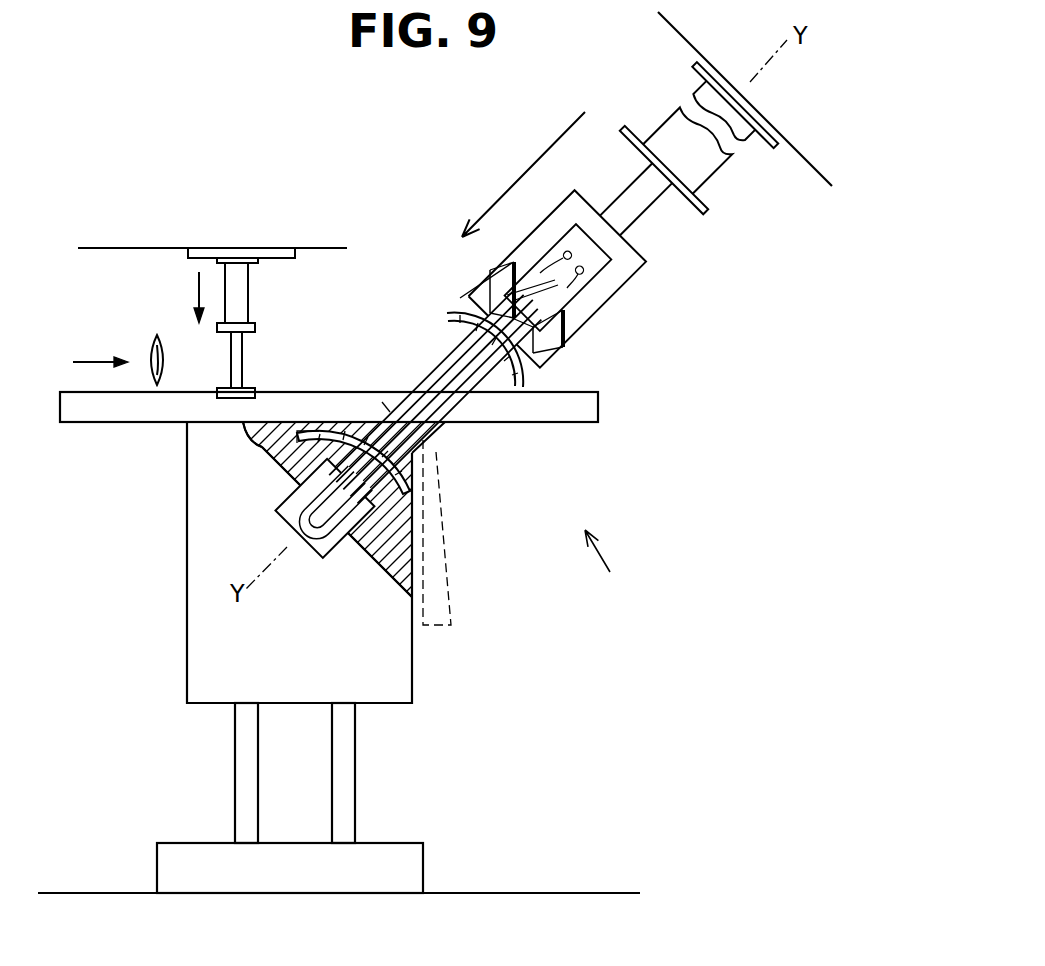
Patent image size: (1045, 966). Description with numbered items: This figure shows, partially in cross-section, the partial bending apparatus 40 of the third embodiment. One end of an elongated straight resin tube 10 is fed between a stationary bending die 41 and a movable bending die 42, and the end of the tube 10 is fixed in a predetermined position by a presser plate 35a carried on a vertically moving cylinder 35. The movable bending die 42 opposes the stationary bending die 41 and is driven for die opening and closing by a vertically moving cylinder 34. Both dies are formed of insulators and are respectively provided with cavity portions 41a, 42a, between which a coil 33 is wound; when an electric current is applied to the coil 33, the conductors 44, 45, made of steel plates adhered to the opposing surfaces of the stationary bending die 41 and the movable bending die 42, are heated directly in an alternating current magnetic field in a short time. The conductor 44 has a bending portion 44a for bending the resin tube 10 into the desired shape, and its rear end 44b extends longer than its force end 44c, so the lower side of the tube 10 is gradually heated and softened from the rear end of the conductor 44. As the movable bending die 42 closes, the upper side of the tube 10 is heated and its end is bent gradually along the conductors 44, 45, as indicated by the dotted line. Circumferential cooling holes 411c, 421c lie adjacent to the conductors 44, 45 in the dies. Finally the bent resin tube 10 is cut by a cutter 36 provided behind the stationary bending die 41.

The resin tube 10 is at (124, 405).
The coil 33 is at (433, 367).
The vertically moving cylinder 34 is at (708, 182).
The vertically moving cylinder 35 is at (233, 284).
The presser plate 35a is at (247, 390).
The cutter 36 is at (152, 348).
The partial bending apparatus 40 is at (616, 568).
The stationary bending die 41 is at (397, 660).
The cavity portion 41a is at (280, 517).
The movable bending die 42 is at (592, 307).
The cavity portion 42a is at (575, 222).
The circumferential hole 421c is at (540, 368).
The conductor 44 is at (412, 468).
The bending portion 44a is at (372, 390).
The rear end 44b is at (280, 468).
The force end 44c is at (410, 483).
The conductor 45 is at (455, 318).
The circumferential hole 411c is at (411, 523).